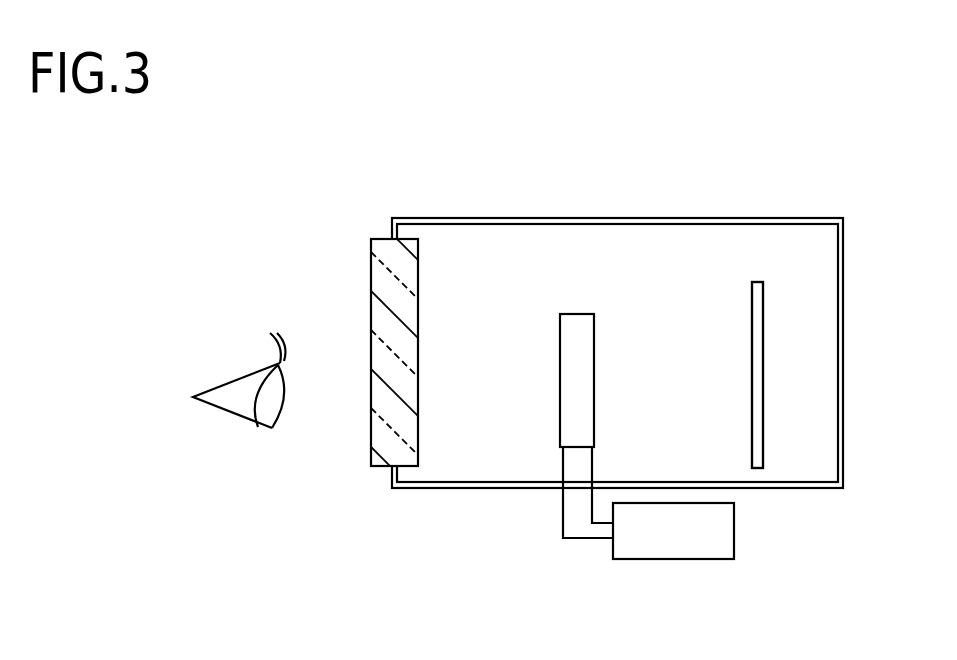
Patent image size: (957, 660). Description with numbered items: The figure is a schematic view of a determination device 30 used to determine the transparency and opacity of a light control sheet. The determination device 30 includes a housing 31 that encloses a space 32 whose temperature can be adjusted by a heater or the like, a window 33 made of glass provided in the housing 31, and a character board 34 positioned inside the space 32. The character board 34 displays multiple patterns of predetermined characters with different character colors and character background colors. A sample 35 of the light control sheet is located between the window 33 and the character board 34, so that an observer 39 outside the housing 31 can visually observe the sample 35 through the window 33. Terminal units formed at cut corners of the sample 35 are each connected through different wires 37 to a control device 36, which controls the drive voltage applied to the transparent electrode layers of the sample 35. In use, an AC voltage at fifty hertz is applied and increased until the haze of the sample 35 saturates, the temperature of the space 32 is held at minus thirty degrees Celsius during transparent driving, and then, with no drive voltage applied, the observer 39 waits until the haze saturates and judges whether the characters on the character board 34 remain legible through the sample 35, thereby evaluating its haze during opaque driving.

The determination device 30 is at (419, 194).
The housing 31 is at (798, 218).
The space 32 is at (793, 313).
The window 33 is at (371, 278).
The character board 34 is at (752, 440).
The sample 35 is at (594, 342).
The control device 36 is at (734, 530).
The wires 37 is at (562, 518).
The observer 39 is at (233, 430).